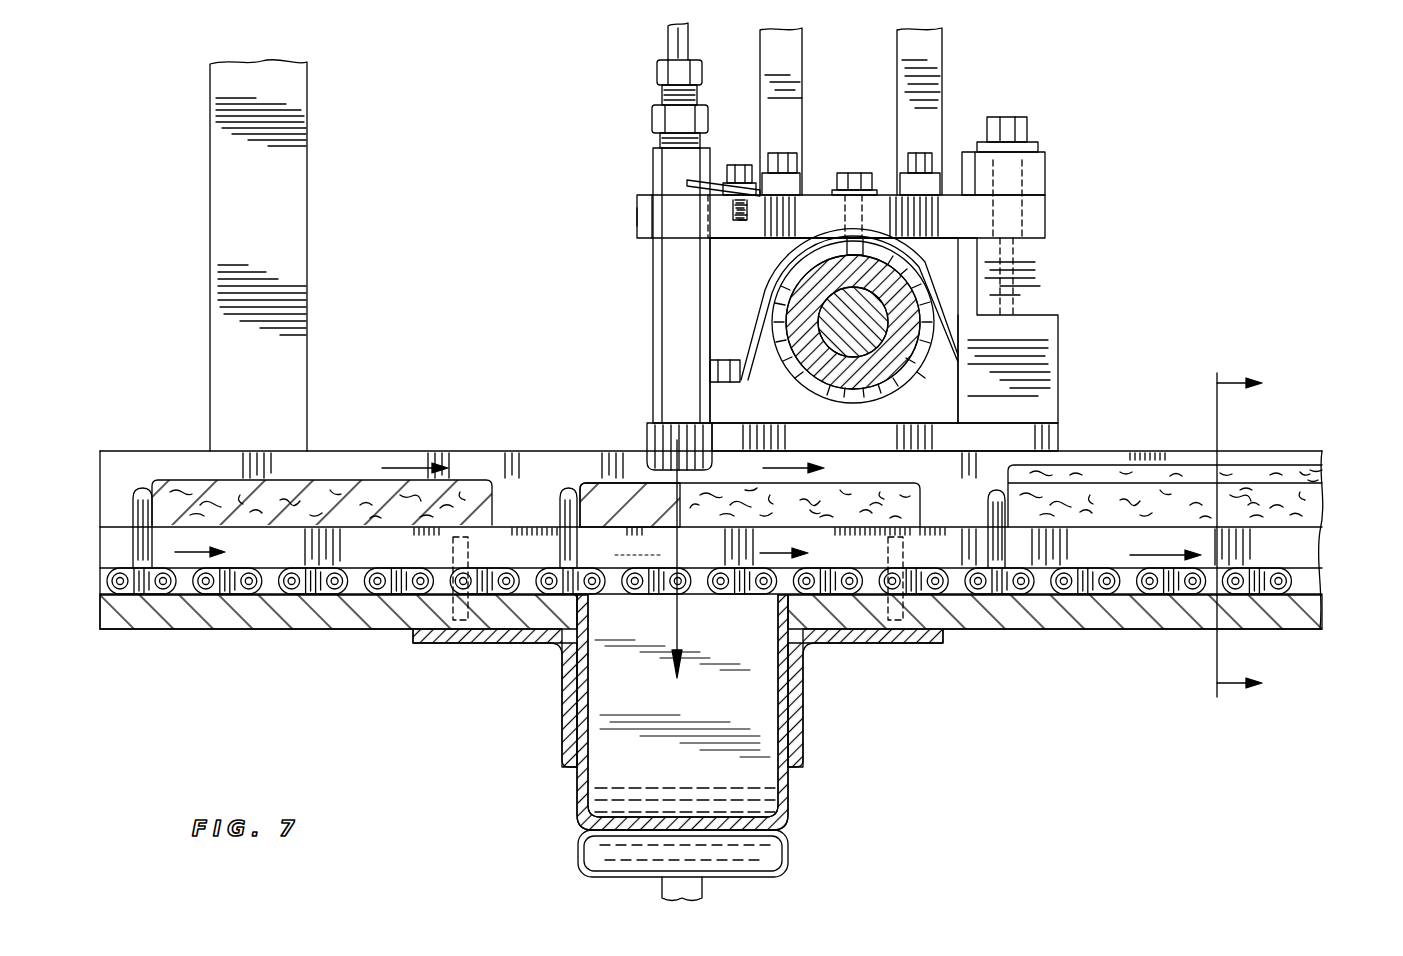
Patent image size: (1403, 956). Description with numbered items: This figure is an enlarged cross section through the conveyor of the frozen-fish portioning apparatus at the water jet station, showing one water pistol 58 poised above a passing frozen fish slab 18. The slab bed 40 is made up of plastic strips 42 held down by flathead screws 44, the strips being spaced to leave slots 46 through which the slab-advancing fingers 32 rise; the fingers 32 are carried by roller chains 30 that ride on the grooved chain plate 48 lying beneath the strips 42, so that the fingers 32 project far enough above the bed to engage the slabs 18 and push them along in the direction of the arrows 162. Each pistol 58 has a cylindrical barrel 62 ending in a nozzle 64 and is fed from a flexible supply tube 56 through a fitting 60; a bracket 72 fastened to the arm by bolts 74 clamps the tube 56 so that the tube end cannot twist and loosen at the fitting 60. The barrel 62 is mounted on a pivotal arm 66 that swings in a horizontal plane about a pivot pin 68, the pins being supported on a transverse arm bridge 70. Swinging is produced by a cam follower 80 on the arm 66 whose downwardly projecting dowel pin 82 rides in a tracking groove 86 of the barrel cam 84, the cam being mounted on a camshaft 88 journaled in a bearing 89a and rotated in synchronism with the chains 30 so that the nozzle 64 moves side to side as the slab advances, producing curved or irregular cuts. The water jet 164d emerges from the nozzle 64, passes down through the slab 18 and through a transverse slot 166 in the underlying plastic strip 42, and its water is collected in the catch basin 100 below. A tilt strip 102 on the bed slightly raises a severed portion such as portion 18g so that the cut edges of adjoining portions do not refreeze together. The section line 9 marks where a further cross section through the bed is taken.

The section line 9- 9 is at (1211, 535).
The frozen fish slab 18 is at (343, 480).
The individual portion 18g is at (1100, 470).
The roller chain 30 is at (1088, 588).
The slab-advancing finger 32 is at (133, 500).
The slab bed 40 is at (190, 522).
The plastic strip 42 is at (1247, 517).
The flathead screw 44 is at (470, 553).
The slot 46 is at (1282, 553).
The grooved chain plate 48 is at (325, 620).
The flexible supply tube 56 is at (683, 42).
The water pistol 58 is at (622, 210).
The fitting 60 is at (672, 73).
The cylindrical barrel 62 is at (652, 298).
The nozzle 64 is at (650, 437).
The pivotal arm 66 is at (637, 224).
The pivot pin 68 is at (1005, 120).
The arm bridge 70 is at (1045, 280).
The bracket 72 is at (950, 52).
The bolt 74 is at (920, 153).
The cam follower 80 is at (860, 173).
The dowel pin 82 is at (863, 250).
The barrel cam 84 is at (813, 393).
The tracking groove 86 is at (922, 348).
The camshaft 88 is at (828, 308).
The bearing 89a is at (947, 308).
The catch basin 100 is at (578, 797).
The tilt strip 102 is at (1337, 470).
The advance direction arrow 162 is at (400, 467).
The water jet 164d is at (678, 613).
The transverse slot 166 is at (655, 548).